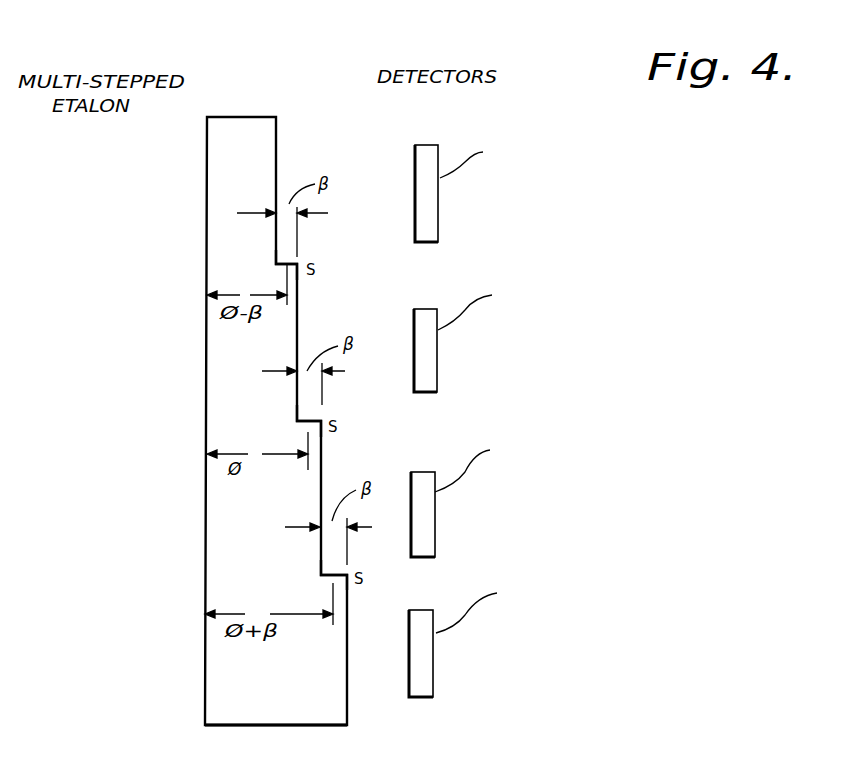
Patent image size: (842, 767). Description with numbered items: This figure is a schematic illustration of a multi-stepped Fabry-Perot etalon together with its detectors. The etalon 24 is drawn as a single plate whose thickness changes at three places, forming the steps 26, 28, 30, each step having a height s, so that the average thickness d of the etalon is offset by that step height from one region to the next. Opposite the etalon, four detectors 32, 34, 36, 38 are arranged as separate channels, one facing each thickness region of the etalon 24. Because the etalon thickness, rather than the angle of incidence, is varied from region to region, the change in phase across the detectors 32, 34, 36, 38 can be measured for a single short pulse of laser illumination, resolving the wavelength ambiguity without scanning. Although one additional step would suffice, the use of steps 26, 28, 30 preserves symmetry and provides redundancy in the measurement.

The etalon 24 is at (216, 550).
The step 26 is at (290, 260).
The step 28 is at (311, 420).
The step 30 is at (337, 572).
The detector 32 is at (432, 224).
The detector 34 is at (422, 372).
The detector 36 is at (428, 538).
The detector 38 is at (432, 687).